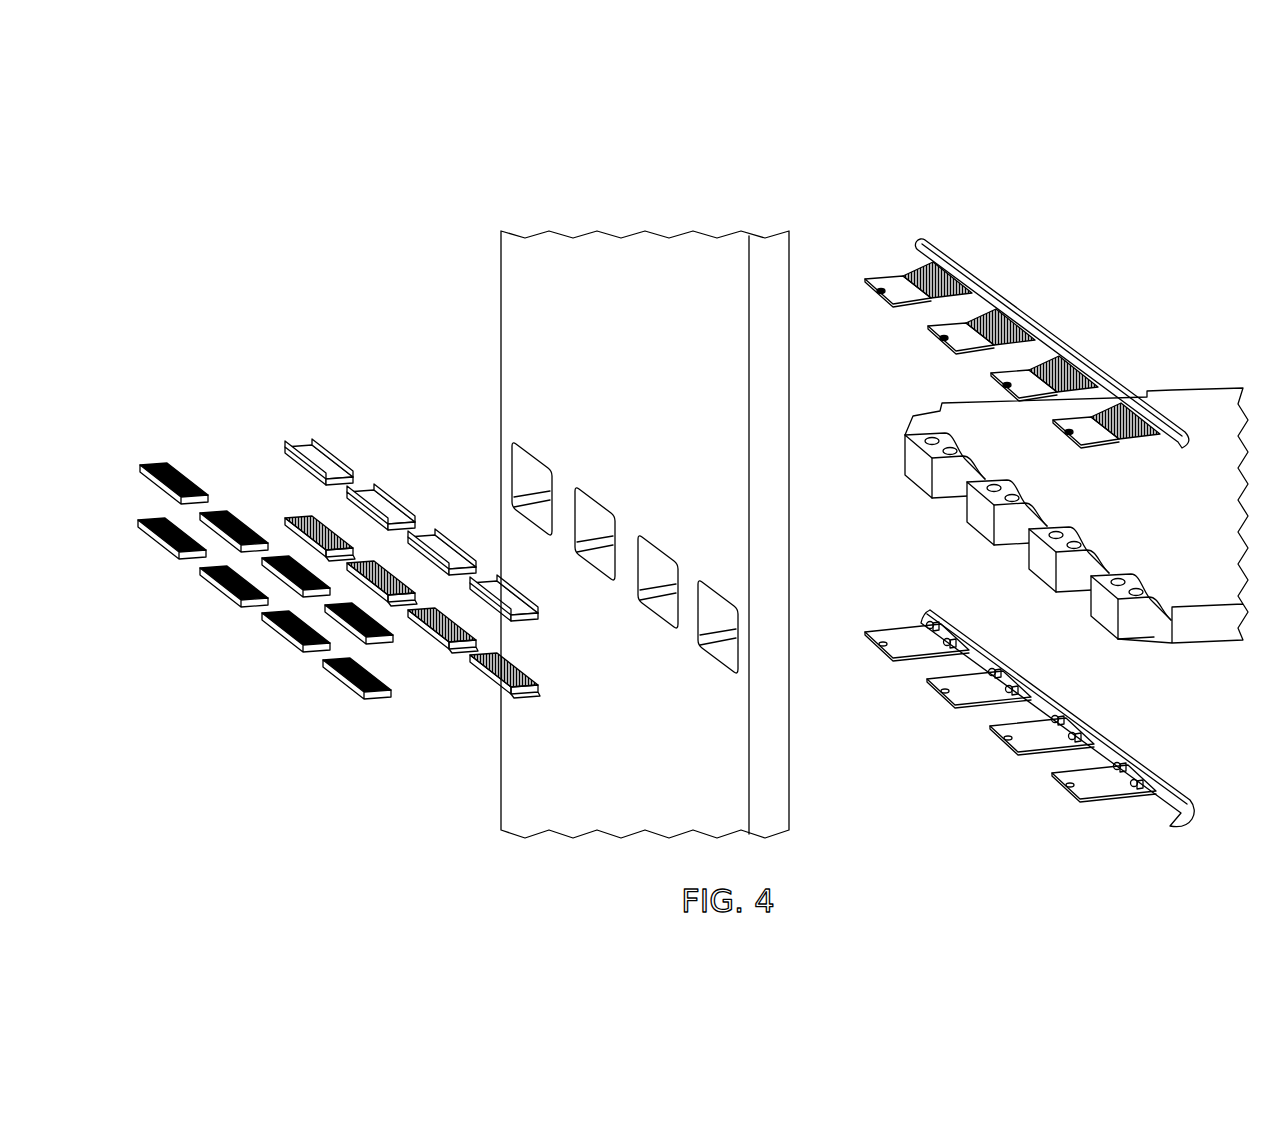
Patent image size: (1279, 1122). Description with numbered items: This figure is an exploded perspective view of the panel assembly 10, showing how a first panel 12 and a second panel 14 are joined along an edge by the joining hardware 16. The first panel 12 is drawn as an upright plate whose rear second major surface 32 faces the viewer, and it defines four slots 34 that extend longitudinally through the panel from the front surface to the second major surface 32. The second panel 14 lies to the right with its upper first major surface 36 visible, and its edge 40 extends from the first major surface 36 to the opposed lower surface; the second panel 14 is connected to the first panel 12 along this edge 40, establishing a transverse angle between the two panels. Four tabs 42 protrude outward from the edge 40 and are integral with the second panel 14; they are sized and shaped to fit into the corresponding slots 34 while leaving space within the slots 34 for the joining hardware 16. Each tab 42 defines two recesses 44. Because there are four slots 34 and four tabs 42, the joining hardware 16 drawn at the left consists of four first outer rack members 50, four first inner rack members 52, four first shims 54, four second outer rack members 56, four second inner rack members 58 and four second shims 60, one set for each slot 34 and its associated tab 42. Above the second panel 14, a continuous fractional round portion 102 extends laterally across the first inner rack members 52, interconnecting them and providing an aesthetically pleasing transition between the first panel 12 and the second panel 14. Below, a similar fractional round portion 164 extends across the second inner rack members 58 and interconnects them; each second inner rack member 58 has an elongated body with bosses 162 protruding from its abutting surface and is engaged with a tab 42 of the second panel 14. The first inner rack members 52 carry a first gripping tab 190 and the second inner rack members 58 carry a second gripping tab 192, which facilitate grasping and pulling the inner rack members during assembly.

The panel assembly 10 is at (1105, 203).
The first panel 12 is at (516, 298).
The second panel 14 is at (1208, 398).
The joining hardware 16 is at (190, 404).
The second major surface 32 is at (627, 295).
The slots 34 is at (530, 445).
The first major surface 36 is at (1169, 522).
The edge 40 is at (1048, 526).
The tabs 42 is at (908, 476).
The recesses 44 is at (940, 438).
The first outer rack members 50 is at (318, 447).
The first inner rack members 52 is at (979, 358).
The first shims 54 is at (174, 465).
The second outer rack members 56 is at (308, 518).
The second inner rack members 58 is at (983, 712).
The second shims 60 is at (176, 559).
The fractional round portion 102 is at (1022, 308).
The bosses 162 is at (932, 620).
The fractional round portion 164 is at (1195, 805).
The first gripping tab 190 is at (863, 284).
The second gripping tab 192 is at (866, 636).